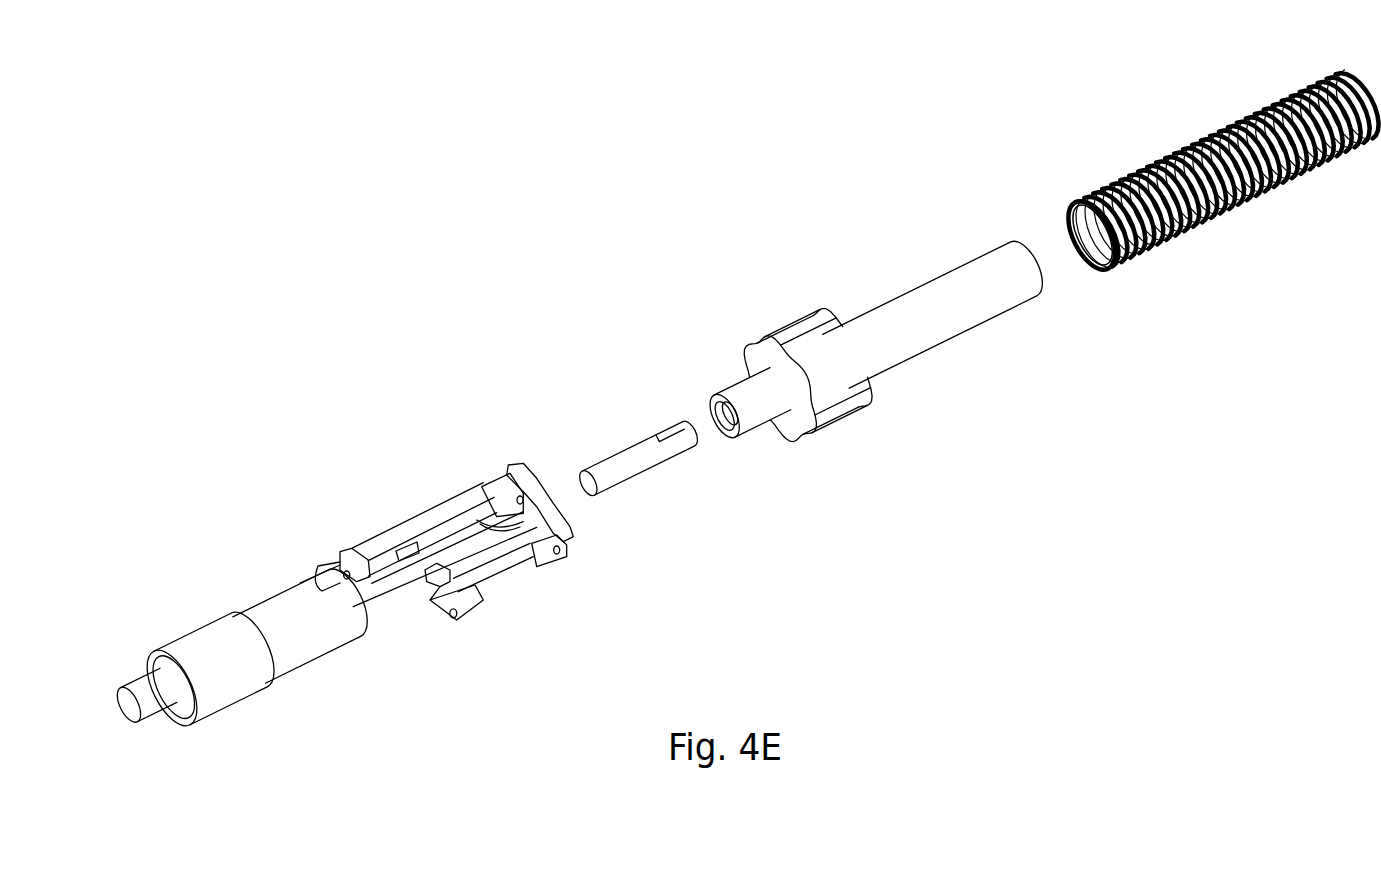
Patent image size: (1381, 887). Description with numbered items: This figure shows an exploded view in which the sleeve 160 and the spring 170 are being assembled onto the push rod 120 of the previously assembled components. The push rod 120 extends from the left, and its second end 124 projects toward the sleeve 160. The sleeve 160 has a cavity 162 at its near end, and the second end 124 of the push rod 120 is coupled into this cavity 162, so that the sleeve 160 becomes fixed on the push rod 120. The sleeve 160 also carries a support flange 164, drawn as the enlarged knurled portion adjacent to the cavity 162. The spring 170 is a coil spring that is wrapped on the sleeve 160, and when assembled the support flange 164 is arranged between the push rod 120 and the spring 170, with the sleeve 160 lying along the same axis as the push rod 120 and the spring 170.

The push rod 120 is at (378, 588).
The second end 124 is at (670, 443).
The sleeve 160 is at (903, 320).
The cavity 162 is at (717, 426).
The support flange 164 is at (820, 380).
The spring 170 is at (1128, 178).